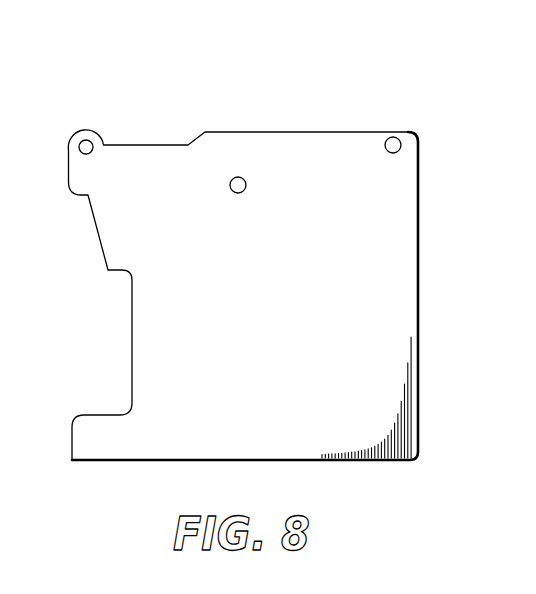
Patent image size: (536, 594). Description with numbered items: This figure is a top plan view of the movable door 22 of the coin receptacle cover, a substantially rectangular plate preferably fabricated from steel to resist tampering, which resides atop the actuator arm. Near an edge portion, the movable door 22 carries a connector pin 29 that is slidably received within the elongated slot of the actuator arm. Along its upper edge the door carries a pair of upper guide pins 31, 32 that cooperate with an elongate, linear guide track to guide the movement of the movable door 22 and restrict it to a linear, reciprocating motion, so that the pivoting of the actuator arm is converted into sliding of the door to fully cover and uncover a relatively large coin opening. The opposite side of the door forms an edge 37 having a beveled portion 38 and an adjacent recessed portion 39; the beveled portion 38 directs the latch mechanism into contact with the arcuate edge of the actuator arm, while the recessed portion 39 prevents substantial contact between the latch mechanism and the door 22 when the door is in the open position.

The movable door 22 is at (333, 88).
The connector pin 29 is at (237, 193).
The upper guide pin 31 is at (84, 131).
The upper guide pin 32 is at (391, 137).
The edge 37 is at (86, 282).
The beveled portion 38 is at (105, 229).
The recessed portion 39 is at (140, 347).